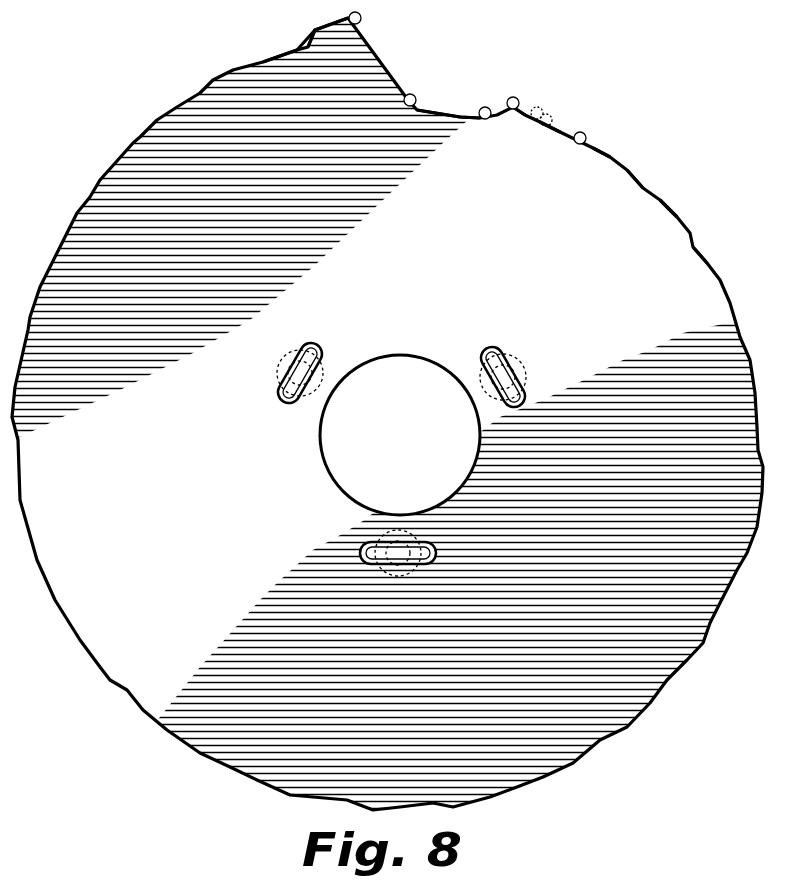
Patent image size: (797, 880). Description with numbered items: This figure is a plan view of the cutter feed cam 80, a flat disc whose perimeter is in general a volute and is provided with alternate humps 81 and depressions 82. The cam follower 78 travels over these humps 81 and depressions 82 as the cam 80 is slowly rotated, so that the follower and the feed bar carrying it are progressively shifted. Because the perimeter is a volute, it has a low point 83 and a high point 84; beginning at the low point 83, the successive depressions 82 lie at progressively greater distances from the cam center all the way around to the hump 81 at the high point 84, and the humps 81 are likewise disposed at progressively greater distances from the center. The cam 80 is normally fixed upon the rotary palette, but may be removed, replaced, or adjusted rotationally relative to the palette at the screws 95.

The cam follower 78 is at (410, 93).
The cutter feed cam 80 is at (625, 207).
The hump 81 is at (327, 25).
The depression 82 is at (275, 57).
The low point 83 is at (418, 110).
The high point 84 is at (348, 17).
The screws 95 is at (290, 372).